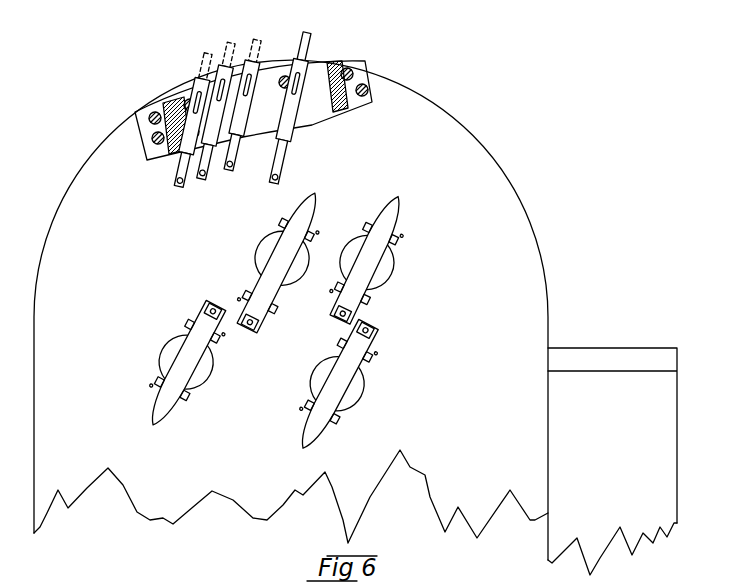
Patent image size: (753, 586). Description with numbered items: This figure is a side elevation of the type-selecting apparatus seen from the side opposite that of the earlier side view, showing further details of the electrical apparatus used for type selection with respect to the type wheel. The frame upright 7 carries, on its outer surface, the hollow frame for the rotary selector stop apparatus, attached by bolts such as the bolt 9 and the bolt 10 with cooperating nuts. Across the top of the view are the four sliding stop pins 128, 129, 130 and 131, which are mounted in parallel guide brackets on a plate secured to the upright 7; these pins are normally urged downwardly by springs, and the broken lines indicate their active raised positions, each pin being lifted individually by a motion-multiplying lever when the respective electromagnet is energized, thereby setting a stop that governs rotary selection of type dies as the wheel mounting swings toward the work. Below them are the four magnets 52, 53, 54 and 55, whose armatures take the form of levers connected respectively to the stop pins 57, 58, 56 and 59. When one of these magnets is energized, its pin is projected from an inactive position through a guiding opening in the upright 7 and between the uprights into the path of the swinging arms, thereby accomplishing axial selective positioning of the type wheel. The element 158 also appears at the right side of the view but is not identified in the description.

The upright 7 is at (505, 197).
The bolt 9 is at (366, 86).
The bolt 10 is at (152, 124).
The magnet 52 is at (388, 266).
The magnet 53 is at (353, 393).
The magnet 54 is at (310, 254).
The magnet 55 is at (203, 373).
The stop pin 56 is at (252, 330).
The stop pin 57 is at (338, 314).
The stop pin 58 is at (371, 327).
The stop pin 59 is at (217, 304).
The sliding stop pin 128 is at (296, 31).
The sliding stop pin 129 is at (249, 39).
The sliding stop pin 130 is at (228, 39).
The sliding stop pin 131 is at (196, 54).
The side tank 158 is at (650, 460).